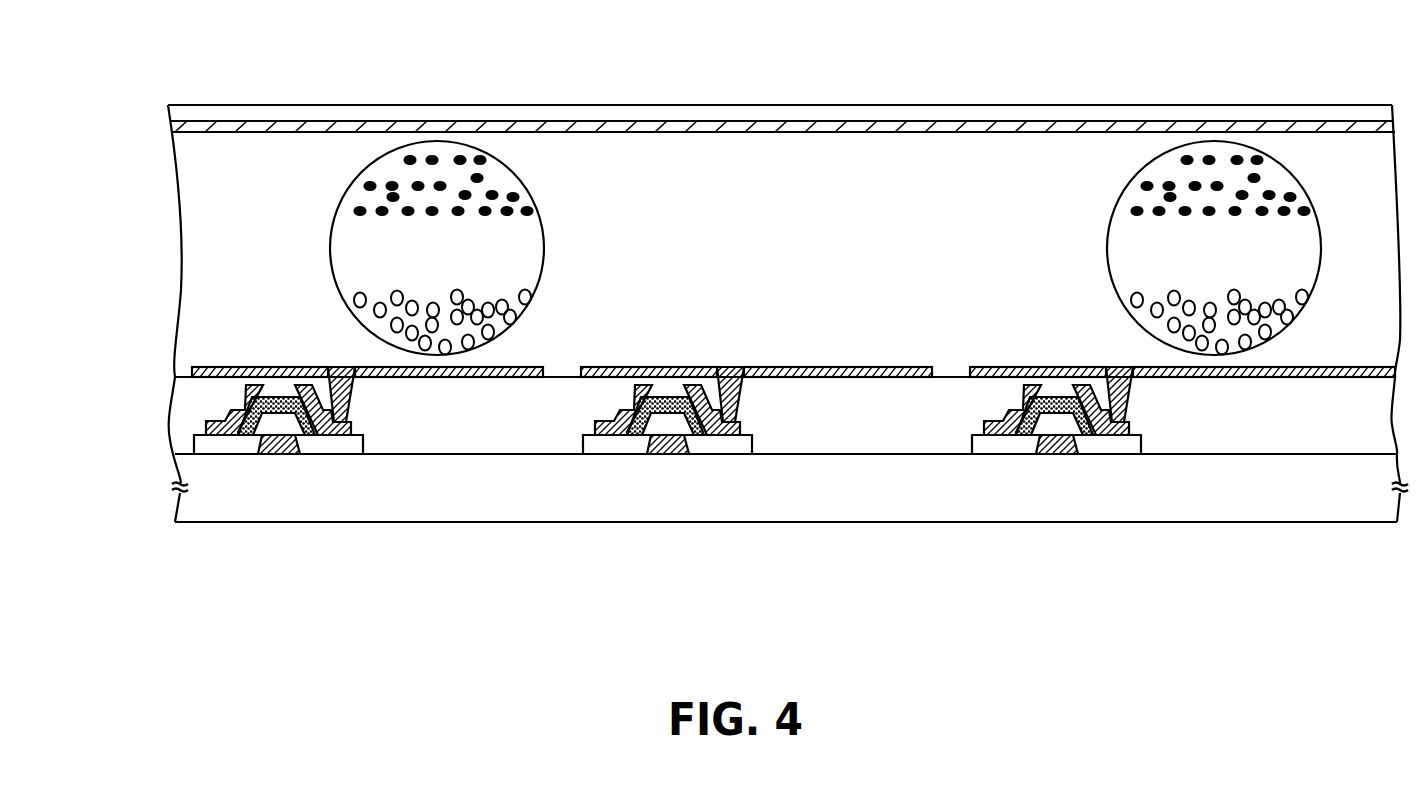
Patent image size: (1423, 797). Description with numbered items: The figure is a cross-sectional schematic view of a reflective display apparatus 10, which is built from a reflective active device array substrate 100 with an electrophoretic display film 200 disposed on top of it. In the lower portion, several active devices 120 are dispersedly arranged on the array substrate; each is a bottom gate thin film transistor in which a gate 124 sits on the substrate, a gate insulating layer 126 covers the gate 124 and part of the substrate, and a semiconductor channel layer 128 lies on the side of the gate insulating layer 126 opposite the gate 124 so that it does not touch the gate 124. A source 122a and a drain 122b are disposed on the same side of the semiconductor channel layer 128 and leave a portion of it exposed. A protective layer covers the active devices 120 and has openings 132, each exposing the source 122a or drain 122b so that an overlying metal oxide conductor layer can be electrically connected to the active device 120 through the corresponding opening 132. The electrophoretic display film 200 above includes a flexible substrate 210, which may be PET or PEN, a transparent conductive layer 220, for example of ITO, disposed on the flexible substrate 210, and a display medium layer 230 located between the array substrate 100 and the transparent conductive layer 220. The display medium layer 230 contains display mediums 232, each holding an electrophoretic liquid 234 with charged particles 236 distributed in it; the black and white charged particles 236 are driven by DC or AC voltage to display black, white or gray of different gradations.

The reflective display apparatus 10 is at (1405, 672).
The reflective active device array substrate 100 is at (158, 370).
The active device 120 is at (447, 598).
The source 122a is at (222, 437).
The drain 122b is at (352, 428).
The gate 124 is at (283, 454).
The gate insulating layer 126 is at (236, 443).
The semiconductor channel layer 128 is at (315, 433).
The opening 132 is at (340, 378).
The electrophoretic display film 200 is at (96, 83).
The flexible substrate 210 is at (184, 112).
The transparent conductive layer 220 is at (176, 130).
The display medium layer 230 is at (158, 135).
The display medium 232 is at (1147, 46).
The electrophoretic liquid 234 is at (1123, 232).
The charged particles 236 is at (1137, 300).